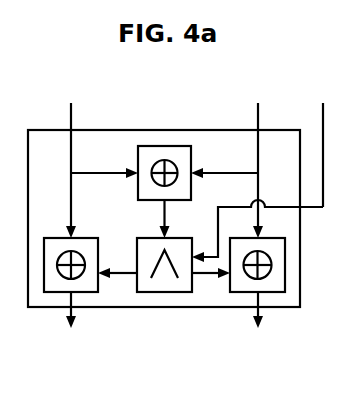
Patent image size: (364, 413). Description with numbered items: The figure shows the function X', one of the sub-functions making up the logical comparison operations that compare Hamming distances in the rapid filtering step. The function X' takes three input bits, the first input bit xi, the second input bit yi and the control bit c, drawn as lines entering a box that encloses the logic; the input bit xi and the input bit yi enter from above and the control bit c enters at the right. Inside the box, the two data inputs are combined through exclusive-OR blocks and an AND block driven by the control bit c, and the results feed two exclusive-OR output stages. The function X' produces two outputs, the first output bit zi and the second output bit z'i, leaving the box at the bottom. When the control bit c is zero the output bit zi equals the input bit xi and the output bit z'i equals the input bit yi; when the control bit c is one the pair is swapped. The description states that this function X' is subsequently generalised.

The function X' is at (164, 259).
The input bit x_i xi is at (100, 156).
The input bit y_i yi is at (229, 156).
The input bit c is at (260, 168).
The output bit z_i zi is at (69, 326).
The output bit z'_i z'i is at (256, 326).